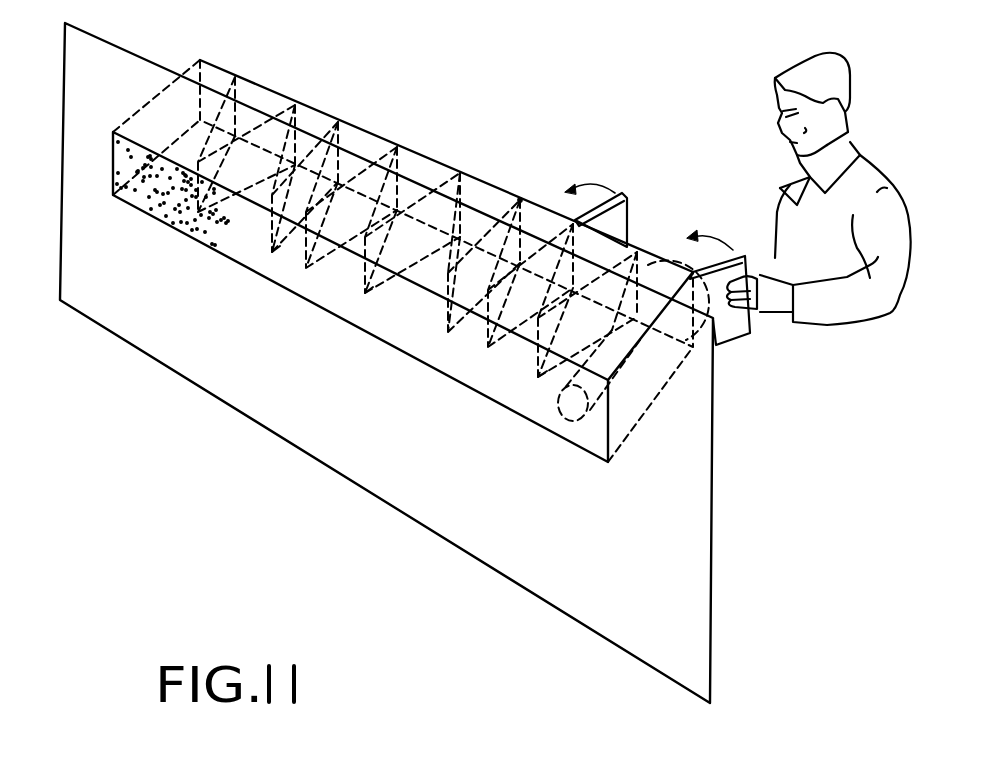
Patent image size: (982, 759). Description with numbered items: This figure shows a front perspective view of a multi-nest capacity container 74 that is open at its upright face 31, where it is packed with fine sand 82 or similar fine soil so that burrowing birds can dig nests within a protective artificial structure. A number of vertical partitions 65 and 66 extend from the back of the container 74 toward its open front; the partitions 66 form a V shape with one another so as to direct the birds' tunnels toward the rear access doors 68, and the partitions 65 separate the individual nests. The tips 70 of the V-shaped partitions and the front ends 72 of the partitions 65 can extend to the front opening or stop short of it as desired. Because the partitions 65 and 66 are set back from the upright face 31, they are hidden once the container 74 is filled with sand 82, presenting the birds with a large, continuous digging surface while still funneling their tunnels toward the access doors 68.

The upright face 31 is at (688, 597).
The fine sand 82 is at (127, 172).
The multi-nest capacity container 74 is at (200, 222).
The partitions 66 is at (292, 99).
The front ends of partitions 72 is at (277, 242).
The partitions 65 is at (347, 152).
The tips of the V-shaped partitions 70 is at (365, 290).
The access doors 68 is at (627, 210).